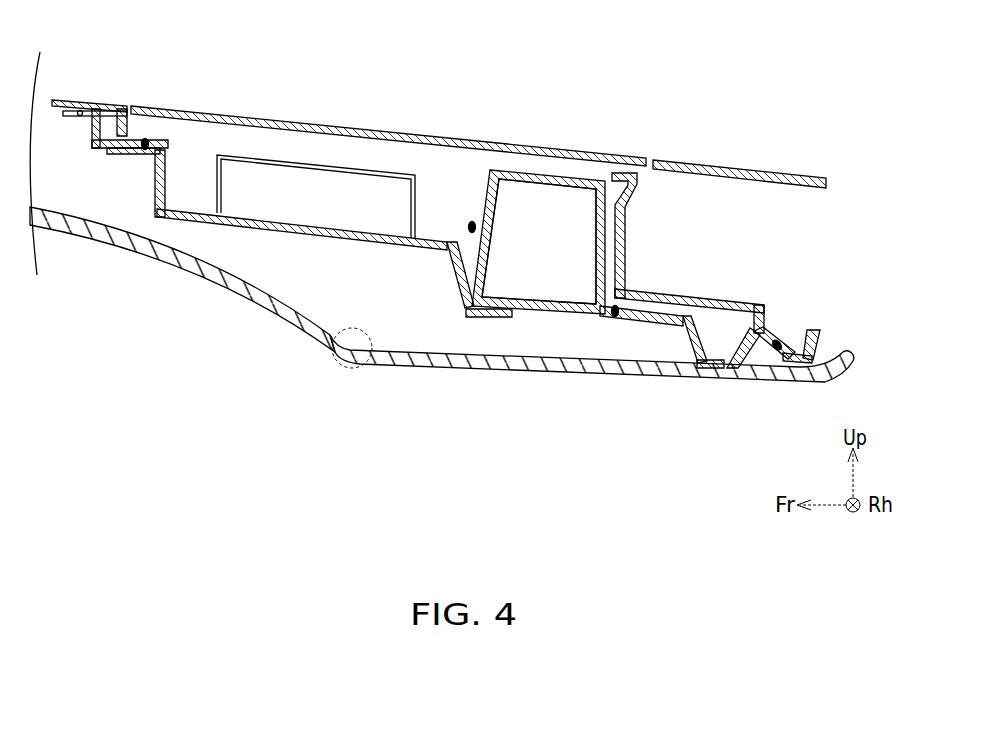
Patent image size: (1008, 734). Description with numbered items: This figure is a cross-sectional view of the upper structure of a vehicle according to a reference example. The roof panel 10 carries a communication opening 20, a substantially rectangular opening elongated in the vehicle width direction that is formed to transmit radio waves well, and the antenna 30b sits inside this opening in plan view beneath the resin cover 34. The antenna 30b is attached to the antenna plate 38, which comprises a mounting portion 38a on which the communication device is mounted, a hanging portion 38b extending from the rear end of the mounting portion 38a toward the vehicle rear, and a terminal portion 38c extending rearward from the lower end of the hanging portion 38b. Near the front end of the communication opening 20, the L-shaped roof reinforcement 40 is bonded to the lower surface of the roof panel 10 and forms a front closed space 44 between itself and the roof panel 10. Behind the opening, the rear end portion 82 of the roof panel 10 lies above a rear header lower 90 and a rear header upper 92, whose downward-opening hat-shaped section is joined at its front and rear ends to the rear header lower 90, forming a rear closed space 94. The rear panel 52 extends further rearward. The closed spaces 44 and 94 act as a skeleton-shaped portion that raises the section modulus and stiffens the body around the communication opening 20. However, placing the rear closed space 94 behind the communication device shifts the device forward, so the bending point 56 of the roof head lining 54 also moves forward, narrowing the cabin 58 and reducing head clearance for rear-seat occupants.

The roof panel 10 is at (73, 101).
The front closed space 44 is at (112, 125).
The roof reinforcement 40 is at (95, 142).
The communication opening 20 is at (168, 142).
The resin cover 34 is at (368, 129).
The rear panel 52 is at (733, 163).
The antenna 30b is at (265, 156).
The antenna plate 38 is at (333, 286).
The mounting portion 38a is at (431, 251).
The hanging portion 38b is at (465, 310).
The terminal portion 38c is at (503, 318).
The rear header upper 92 is at (543, 171).
The rear closed space 94 is at (546, 254).
The rear end portion 82 is at (626, 236).
The rear header lower 90 is at (570, 328).
The roof head lining 54 is at (193, 273).
The cabin 58 is at (442, 466).
The bending point 56 is at (352, 369).